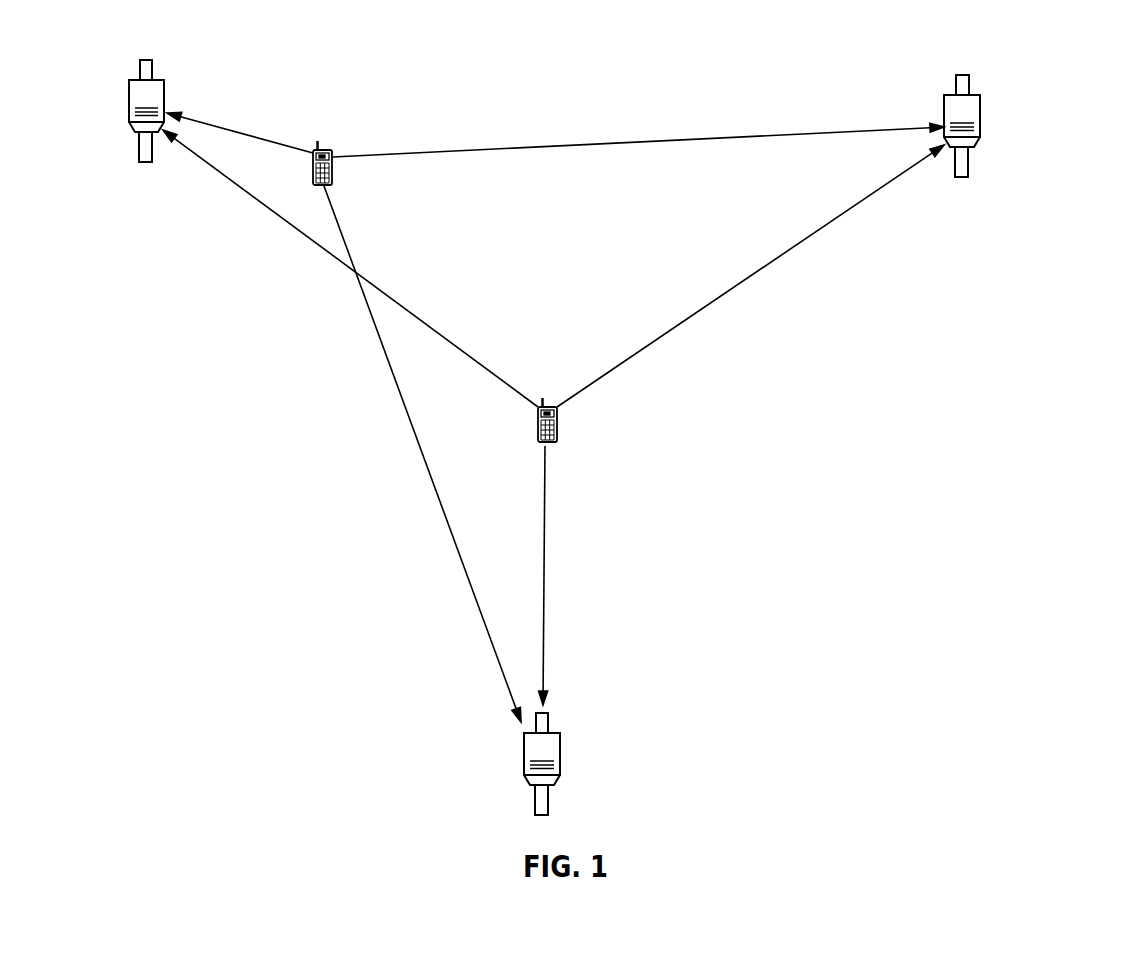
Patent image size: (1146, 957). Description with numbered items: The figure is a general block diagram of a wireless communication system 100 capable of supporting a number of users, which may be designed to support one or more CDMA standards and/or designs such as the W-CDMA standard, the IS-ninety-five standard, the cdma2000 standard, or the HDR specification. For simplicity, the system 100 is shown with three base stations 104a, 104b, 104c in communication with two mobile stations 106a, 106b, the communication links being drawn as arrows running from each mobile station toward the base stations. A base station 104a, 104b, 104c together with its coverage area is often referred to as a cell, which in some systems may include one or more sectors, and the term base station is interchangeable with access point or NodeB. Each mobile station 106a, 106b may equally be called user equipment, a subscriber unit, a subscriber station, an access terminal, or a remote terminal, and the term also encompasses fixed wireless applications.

The wireless communication system 100 is at (1097, 295).
The base station 104a is at (160, 80).
The base station 104b is at (975, 95).
The base station 104c is at (550, 733).
The mobile station 106a is at (319, 149).
The mobile station 106b is at (545, 444).